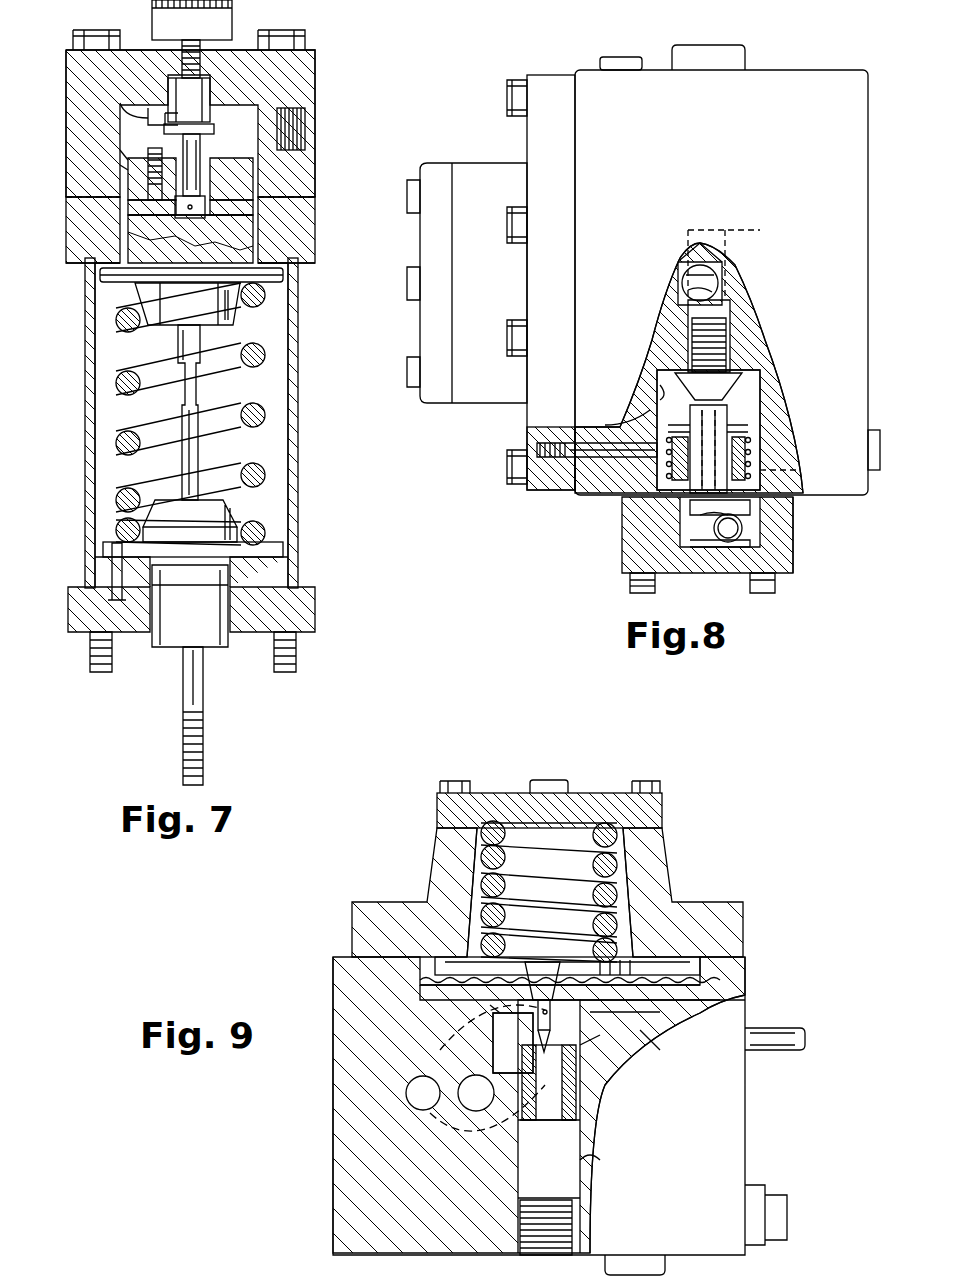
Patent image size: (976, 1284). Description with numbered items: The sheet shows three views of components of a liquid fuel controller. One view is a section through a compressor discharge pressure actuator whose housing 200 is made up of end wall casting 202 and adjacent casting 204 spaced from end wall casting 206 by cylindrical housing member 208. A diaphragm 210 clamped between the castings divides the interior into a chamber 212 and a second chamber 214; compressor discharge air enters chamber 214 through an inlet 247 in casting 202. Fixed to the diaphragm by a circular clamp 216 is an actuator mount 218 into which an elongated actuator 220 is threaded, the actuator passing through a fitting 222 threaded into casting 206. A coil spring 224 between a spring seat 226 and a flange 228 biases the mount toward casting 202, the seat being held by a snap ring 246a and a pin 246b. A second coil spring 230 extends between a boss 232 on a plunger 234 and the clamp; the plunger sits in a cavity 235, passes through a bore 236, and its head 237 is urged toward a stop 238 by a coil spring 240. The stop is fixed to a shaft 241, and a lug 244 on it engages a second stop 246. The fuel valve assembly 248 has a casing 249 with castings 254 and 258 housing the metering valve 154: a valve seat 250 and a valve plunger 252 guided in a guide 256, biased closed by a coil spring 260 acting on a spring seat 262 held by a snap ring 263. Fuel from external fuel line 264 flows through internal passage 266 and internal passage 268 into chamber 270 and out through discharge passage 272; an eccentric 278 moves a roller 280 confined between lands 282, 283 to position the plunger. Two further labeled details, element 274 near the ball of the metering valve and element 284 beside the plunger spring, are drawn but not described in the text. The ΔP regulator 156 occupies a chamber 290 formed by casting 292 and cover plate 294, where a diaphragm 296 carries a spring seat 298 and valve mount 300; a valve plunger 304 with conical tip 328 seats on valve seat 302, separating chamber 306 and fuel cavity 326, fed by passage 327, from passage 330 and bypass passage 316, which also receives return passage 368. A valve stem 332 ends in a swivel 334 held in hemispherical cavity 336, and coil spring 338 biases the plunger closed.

In FIG. 8, the metering valve 154 is at (750, 360).
In FIG. 9, the ΔP regulator 156 is at (478, 930).
In FIG. 7, the housing 200 is at (300, 414).
In FIG. 7, the end wall casting 202 is at (315, 90).
In FIG. 7, the casting 204 is at (315, 222).
In FIG. 7, the end wall casting 206 is at (315, 616).
In FIG. 7, the cylindrical housing member 208 is at (298, 479).
In FIG. 7, the diaphragm 210 is at (255, 185).
In FIG. 7, the chamber 212 is at (103, 480).
In FIG. 7, the second chamber 214 is at (125, 168).
In FIG. 7, the circular clamp 216 is at (255, 163).
In FIG. 7, the actuator mount 218 is at (260, 243).
In FIG. 7, the actuator 220 is at (199, 451).
In FIG. 7, the fitting 222 is at (212, 645).
In FIG. 7, the coil spring 224 is at (266, 356).
In FIG. 7, the spring seat 226 is at (283, 549).
In FIG. 7, the flange 228 is at (283, 275).
In FIG. 7, the coil spring 230 is at (148, 178).
In FIG. 7, the boss 232 is at (207, 210).
In FIG. 7, the plunger 234 is at (128, 150).
In FIG. 7, the cavity 235 is at (175, 236).
In FIG. 7, the bore 236 is at (207, 200).
In FIG. 7, the head 237 is at (212, 128).
In FIG. 7, the stop 238 is at (210, 100).
In FIG. 7, the coil spring 240 is at (203, 152).
In FIG. 7, the shaft 241 is at (200, 66).
In FIG. 7, the lug 244 is at (158, 115).
In FIG. 7, the second stop 246 is at (160, 112).
In FIG. 7, the snap ring 246a is at (240, 588).
In FIG. 7, the pin 246b is at (108, 560).
In FIG. 7, the inlet 247 is at (305, 125).
In FIG. 8, the fuel valve assembly 248 is at (770, 50).
In FIG. 9, the fuel valve assembly 248 is at (705, 783).
In FIG. 8, the casing 249 is at (868, 286).
In FIG. 8, the valve seat 250 is at (745, 386).
In FIG. 8, the metering valve plunger 252 is at (730, 410).
In FIG. 8, the casting 254 is at (718, 170).
In FIG. 9, the casting 254 is at (333, 988).
In FIG. 8, the guide 256 is at (793, 514).
In FIG. 8, the casting 258 is at (622, 541).
In FIG. 8, the coil spring 260 is at (748, 446).
In FIG. 8, the spring seat 262 is at (748, 428).
In FIG. 8, the snap ring 263 is at (660, 420).
In FIG. 9, the external fuel line 264 is at (774, 1050).
In FIG. 8, the internal passage 266 is at (722, 270).
In FIG. 9, the internal passage 266 is at (420, 1078).
In FIG. 8, the internal passage 268 is at (690, 340).
In FIG. 8, the chamber 270 is at (660, 390).
In FIG. 9, the chamber 270 is at (430, 1112).
In FIG. 8, the internal discharge passage 272 is at (728, 232).
In FIG. 9, the internal discharge passage 272 is at (406, 1093).
In FIG. 8, the ball 274 is at (720, 290).
In FIG. 8, the eccentric 278 is at (640, 576).
In FIG. 8, the roller 280 is at (735, 545).
In FIG. 8, the land 282 is at (745, 525).
In FIG. 8, the land 283 is at (715, 555).
In FIG. 8, the passage 284 is at (762, 472).
In FIG. 9, the chamber 290 is at (480, 868).
In FIG. 8, the casting 292 is at (500, 410).
In FIG. 9, the casting 292 is at (360, 902).
In FIG. 8, the cover plate 294 is at (440, 405).
In FIG. 9, the cover plate 294 is at (598, 793).
In FIG. 9, the diaphragm 296 is at (660, 990).
In FIG. 9, the spring seat 298 is at (690, 915).
In FIG. 9, the valve mount 300 is at (640, 1012).
In FIG. 9, the valve seat 302 is at (577, 1092).
In FIG. 9, the valve plunger 304 is at (600, 1045).
In FIG. 9, the second chamber 306 is at (650, 1028).
In FIG. 9, the internal passage 316 is at (580, 1197).
In FIG. 9, the fuel cavity 326 is at (536, 1038).
In FIG. 9, the internal fuel passage 327 is at (660, 1050).
In FIG. 9, the conical tip 328 is at (576, 1065).
In FIG. 9, the internal passage 330 is at (580, 1137).
In FIG. 9, the valve stem 332 is at (535, 1005).
In FIG. 9, the swivel 334 is at (528, 985).
In FIG. 9, the hemispherical cavity 336 is at (480, 957).
In FIG. 9, the coil spring 338 is at (641, 866).
In FIG. 9, the internal return passage 368 is at (588, 1156).